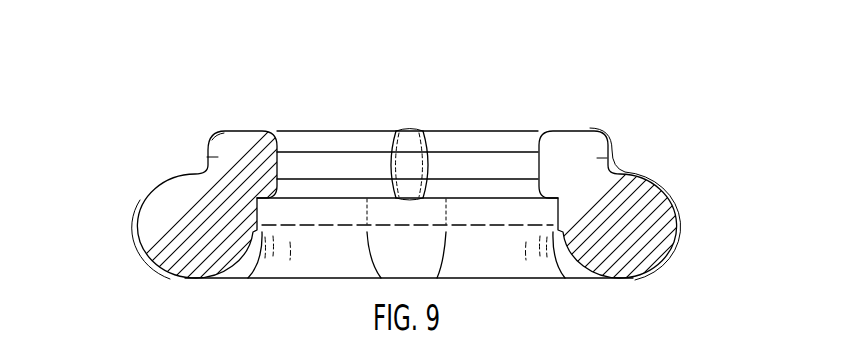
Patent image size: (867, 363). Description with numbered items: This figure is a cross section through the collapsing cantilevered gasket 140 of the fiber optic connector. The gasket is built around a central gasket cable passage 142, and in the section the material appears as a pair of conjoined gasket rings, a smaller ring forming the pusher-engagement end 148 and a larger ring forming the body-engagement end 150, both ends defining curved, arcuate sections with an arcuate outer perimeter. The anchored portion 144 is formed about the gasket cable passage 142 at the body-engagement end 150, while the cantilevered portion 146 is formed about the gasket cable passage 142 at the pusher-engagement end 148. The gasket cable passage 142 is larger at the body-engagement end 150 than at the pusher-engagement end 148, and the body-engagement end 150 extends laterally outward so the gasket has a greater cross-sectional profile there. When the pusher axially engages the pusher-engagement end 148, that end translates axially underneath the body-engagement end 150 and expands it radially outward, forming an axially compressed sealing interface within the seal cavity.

The collapsing cantilevered gasket 140 is at (455, 182).
The gasket cable passage 142 is at (419, 100).
The anchored portion 144 is at (307, 253).
The cantilevered portion 146 is at (335, 160).
The pusher-engagement end 148 is at (597, 137).
The body-engagement end 150 is at (675, 238).